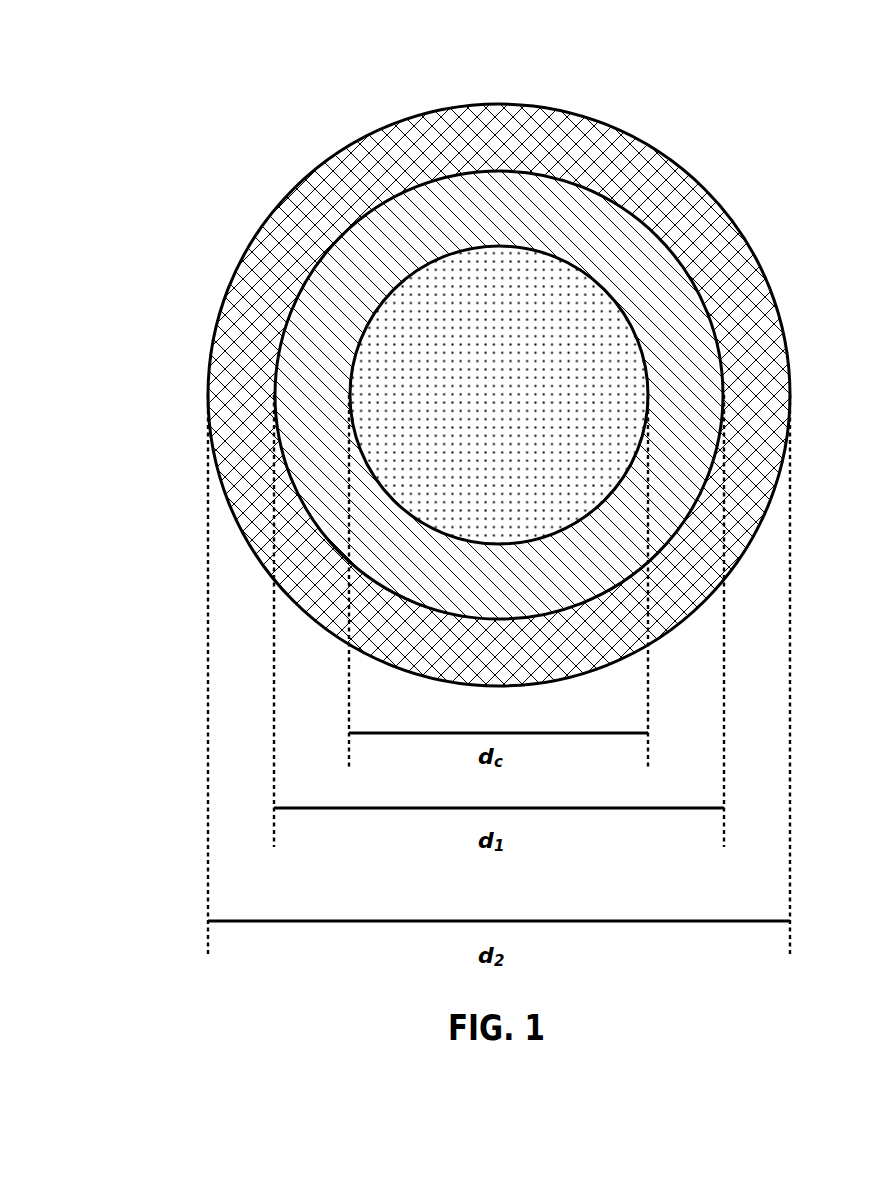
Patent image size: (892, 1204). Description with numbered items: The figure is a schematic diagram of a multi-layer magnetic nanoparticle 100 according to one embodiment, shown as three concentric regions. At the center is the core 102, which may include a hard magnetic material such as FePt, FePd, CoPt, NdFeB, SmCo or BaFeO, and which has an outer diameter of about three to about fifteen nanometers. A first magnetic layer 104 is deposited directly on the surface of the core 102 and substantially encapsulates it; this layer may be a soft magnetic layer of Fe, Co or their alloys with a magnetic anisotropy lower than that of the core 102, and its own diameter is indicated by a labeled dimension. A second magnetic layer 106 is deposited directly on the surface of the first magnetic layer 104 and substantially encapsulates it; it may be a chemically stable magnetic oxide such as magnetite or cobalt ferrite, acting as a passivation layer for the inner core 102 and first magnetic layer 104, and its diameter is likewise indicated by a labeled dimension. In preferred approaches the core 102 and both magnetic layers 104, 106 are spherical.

The multi-layer magnetic nanoparticle 100 is at (222, 88).
The core 102 is at (478, 406).
The first magnetic layer 104 is at (477, 223).
The second magnetic layer 106 is at (477, 155).